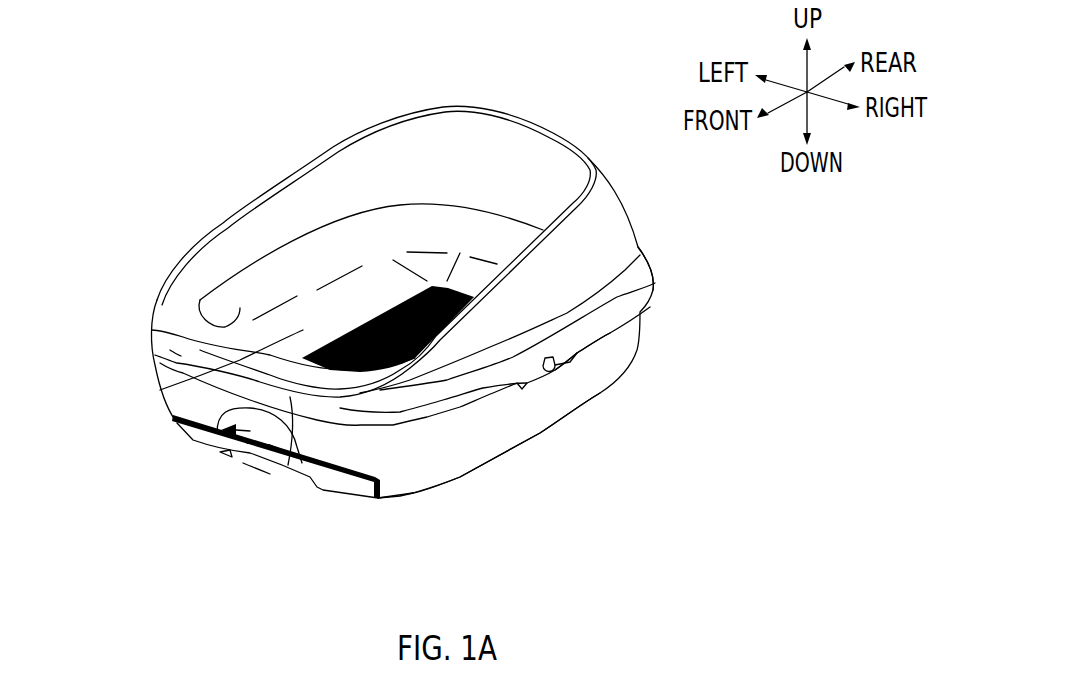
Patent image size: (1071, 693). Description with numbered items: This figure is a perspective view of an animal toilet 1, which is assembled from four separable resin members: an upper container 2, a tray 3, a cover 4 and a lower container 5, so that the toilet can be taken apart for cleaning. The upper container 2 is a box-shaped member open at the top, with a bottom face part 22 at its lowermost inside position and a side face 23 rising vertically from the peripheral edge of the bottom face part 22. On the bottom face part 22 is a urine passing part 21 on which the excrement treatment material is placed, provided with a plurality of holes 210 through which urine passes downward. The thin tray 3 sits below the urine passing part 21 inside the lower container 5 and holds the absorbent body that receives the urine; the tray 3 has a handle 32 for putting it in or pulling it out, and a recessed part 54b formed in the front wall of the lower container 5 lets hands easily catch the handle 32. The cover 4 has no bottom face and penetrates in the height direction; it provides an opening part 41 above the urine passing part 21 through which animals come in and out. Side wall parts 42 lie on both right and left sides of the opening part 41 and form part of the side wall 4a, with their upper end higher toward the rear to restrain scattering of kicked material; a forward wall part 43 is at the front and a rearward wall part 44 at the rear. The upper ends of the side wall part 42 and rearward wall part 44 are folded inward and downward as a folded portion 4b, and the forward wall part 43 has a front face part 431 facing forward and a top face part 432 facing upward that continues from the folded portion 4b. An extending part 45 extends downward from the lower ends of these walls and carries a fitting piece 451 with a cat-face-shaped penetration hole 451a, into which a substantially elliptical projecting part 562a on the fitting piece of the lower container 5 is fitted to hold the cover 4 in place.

The animal toilet 1 is at (189, 121).
The upper container 2 is at (240, 272).
The urine passing part 21 is at (403, 297).
The holes 210 is at (367, 356).
The bottom face part 22 is at (197, 380).
The side face 23 is at (193, 336).
The tray 3 is at (193, 440).
The handle 32 is at (243, 463).
The cover 4 is at (627, 213).
The side wall 4a is at (269, 167).
The folded portion 4b is at (413, 109).
The opening part 41 is at (523, 161).
The side wall part 42 is at (314, 156).
The forward wall part 43 is at (353, 566).
The front face part 431 is at (288, 465).
The top face part 432 is at (322, 378).
The rearward wall part 44 is at (468, 106).
The extending part 45 is at (647, 297).
The fitting piece 451 is at (560, 363).
The penetration hole 451a is at (552, 375).
The recessed part 54b is at (218, 432).
The lower container 5 is at (447, 463).
The projecting part 562a is at (547, 356).